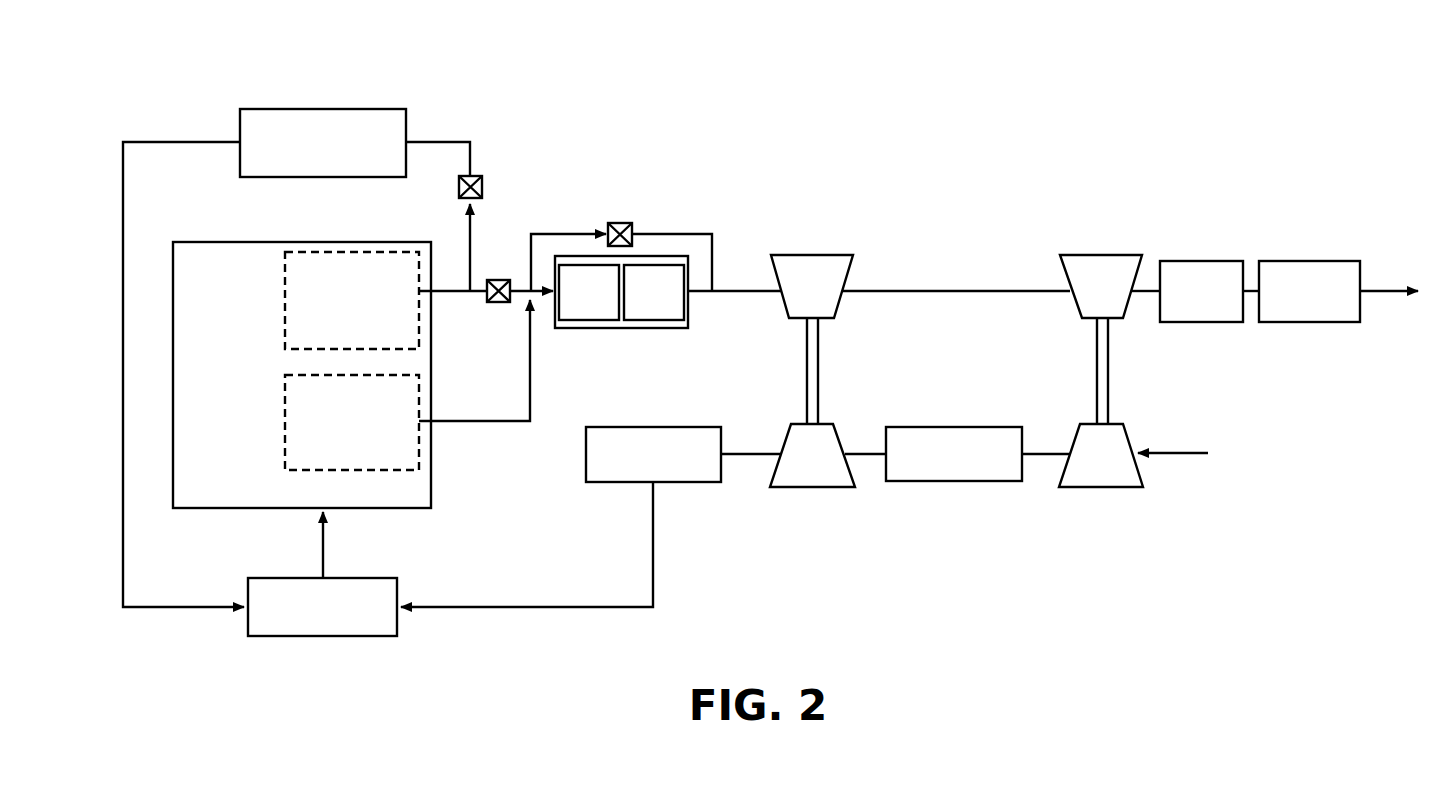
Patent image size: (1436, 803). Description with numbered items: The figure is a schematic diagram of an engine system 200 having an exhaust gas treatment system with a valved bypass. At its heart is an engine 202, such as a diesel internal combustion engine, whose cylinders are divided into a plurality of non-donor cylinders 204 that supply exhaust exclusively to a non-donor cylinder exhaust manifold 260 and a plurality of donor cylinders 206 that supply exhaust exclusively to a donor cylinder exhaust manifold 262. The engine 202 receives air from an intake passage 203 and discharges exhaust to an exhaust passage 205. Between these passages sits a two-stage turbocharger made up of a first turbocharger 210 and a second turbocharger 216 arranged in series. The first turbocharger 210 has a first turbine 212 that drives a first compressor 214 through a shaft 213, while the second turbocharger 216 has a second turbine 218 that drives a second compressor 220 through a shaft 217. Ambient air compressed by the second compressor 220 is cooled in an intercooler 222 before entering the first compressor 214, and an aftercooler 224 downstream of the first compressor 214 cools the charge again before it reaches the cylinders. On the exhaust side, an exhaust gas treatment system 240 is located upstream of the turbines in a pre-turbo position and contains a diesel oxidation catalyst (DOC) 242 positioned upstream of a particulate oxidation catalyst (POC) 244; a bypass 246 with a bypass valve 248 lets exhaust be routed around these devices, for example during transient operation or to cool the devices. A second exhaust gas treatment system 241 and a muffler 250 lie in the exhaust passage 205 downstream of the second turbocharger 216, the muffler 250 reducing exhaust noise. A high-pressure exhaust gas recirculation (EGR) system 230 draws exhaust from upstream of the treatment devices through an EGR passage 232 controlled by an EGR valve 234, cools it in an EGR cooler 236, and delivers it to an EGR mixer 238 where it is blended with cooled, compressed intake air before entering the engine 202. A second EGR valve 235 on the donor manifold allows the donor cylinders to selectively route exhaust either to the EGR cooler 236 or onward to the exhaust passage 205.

The engine system 200 is at (1148, 66).
The engine 202 is at (302, 375).
The intake passage 203 is at (1173, 451).
The non-donor cylinders 204 is at (352, 422).
The exhaust passage 205 is at (1380, 289).
The donor cylinders 206 is at (352, 300).
The first turbocharger 210 is at (820, 231).
The first turbine 212 is at (920, 286).
The shaft 213 is at (818, 385).
The first compressor 214 is at (828, 455).
The second turbocharger 216 is at (1103, 231).
The shaft 217 is at (1108, 394).
The second turbine 218 is at (1110, 286).
The second compressor 220 is at (1101, 455).
The intercooler 222 is at (978, 454).
The aftercooler 224 is at (591, 517).
The exhaust gas recirculation (EGR) system 230 is at (438, 94).
The EGR passage 232 is at (432, 140).
The EGR valve 234 is at (482, 188).
The second EGR valve 235 is at (490, 303).
The EGR cooler 236 is at (323, 143).
The EGR mixer 238 is at (322, 574).
The exhaust gas treatment system 240 is at (687, 192).
The second exhaust gas treatment system 241 is at (1209, 291).
The diesel oxidation catalyst (DOC) 242 is at (589, 292).
The particulate oxidation catalyst (POC) 244 is at (654, 292).
The bypass 246 is at (537, 236).
The bypass valve 248 is at (622, 222).
The muffler 250 is at (1309, 291).
The non-donor cylinder exhaust manifold 260 is at (498, 424).
The donor cylinder exhaust manifold 262 is at (440, 293).